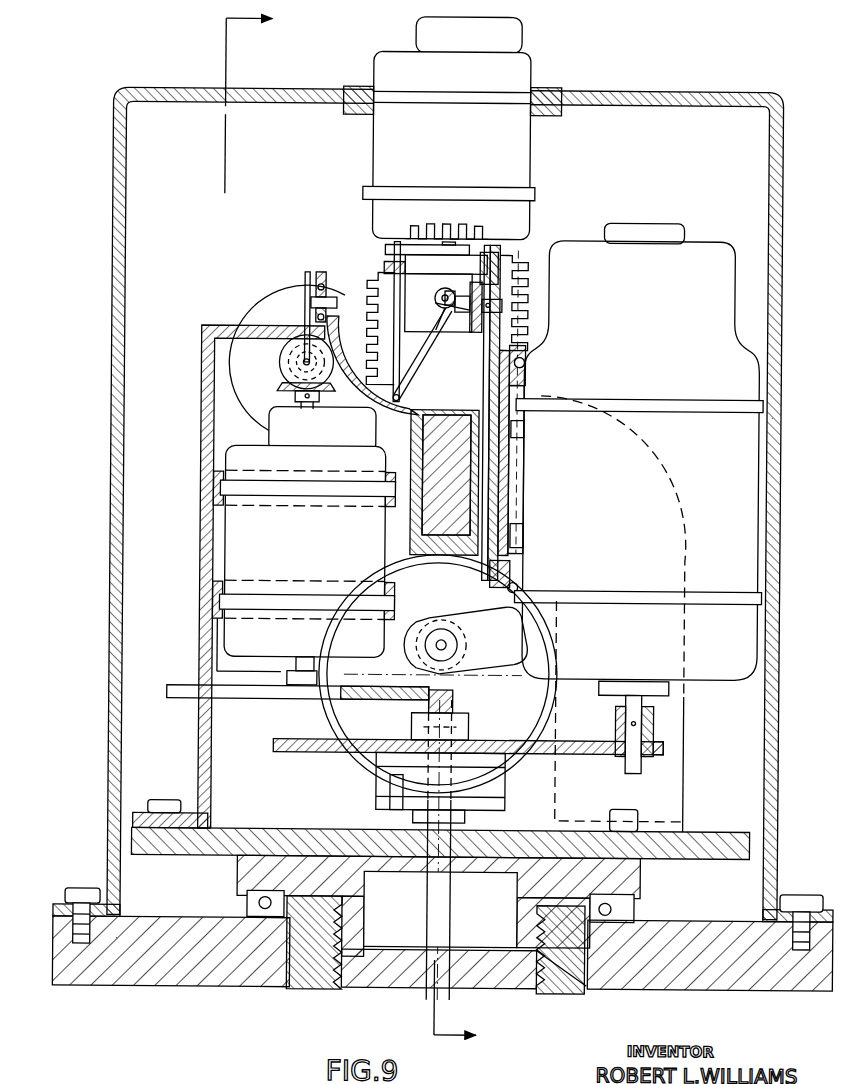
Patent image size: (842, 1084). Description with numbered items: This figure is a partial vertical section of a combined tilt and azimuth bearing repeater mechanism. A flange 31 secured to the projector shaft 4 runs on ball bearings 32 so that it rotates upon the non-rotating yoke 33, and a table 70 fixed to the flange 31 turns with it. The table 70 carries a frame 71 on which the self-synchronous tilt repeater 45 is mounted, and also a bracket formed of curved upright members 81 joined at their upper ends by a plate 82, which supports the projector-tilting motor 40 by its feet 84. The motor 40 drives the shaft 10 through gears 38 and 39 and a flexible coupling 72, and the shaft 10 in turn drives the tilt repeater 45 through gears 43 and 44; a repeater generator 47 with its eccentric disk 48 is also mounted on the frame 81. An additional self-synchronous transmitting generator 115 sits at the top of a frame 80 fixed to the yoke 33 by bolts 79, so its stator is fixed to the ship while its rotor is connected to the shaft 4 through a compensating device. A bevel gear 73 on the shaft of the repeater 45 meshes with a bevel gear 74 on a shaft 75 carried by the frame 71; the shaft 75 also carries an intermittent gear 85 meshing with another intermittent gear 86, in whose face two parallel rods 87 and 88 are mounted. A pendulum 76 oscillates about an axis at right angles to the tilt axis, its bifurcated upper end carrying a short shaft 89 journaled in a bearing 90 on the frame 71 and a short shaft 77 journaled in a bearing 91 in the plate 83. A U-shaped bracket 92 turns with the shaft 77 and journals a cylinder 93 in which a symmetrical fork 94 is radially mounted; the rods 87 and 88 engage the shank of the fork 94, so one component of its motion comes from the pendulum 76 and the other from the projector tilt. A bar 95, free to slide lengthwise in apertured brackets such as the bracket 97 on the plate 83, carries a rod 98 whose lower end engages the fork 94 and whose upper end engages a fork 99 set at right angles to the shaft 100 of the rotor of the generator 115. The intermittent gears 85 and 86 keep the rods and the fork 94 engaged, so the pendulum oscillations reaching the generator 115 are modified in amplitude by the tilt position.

The projector shaft 4 is at (585, 985).
The shaft 10 is at (460, 912).
The flange 31 is at (642, 883).
The ball bearings 32 is at (630, 912).
The yoke 33 is at (680, 937).
The gear 38 is at (545, 753).
The gear 39 is at (655, 735).
The projector-tilting motor 40 is at (735, 495).
The gear 43 is at (450, 708).
The gear 44 is at (262, 700).
The self-synchronous tilt repeater 45 is at (240, 465).
The repeater generator 47 is at (482, 714).
The eccentric disk 48 is at (380, 756).
The table 70 is at (700, 842).
The frame 71 is at (200, 500).
The flexible coupling 72 is at (482, 795).
The bevel gear 73 is at (280, 388).
The bevel gear 74 is at (286, 363).
The shaft 75 is at (304, 352).
The pendulum 76 is at (412, 522).
The short shaft 77 is at (500, 298).
The bolts 79 is at (82, 900).
The frame 80 is at (112, 848).
The curved upright members 81 is at (688, 780).
The plate 82 is at (505, 510).
The plate 83 is at (494, 480).
The feet 84 is at (523, 360).
The intermittent gear 85 is at (266, 320).
The intermittent gear 86 is at (382, 295).
The rod 87 is at (438, 330).
The rod 88 is at (436, 338).
The short shaft 89 is at (314, 290).
The bearing 90 is at (392, 250).
The bearing 91 is at (500, 322).
The U-shaped bracket 92 is at (456, 312).
The cylinder 93 is at (433, 298).
The symmetrical fork 94 is at (414, 358).
The bar 95 is at (415, 258).
The bracket 97 is at (468, 278).
The rod 98 is at (375, 330).
The fork 99 is at (420, 232).
The shaft 100 is at (455, 268).
The self-synchronous transmitting generator 115 is at (505, 80).